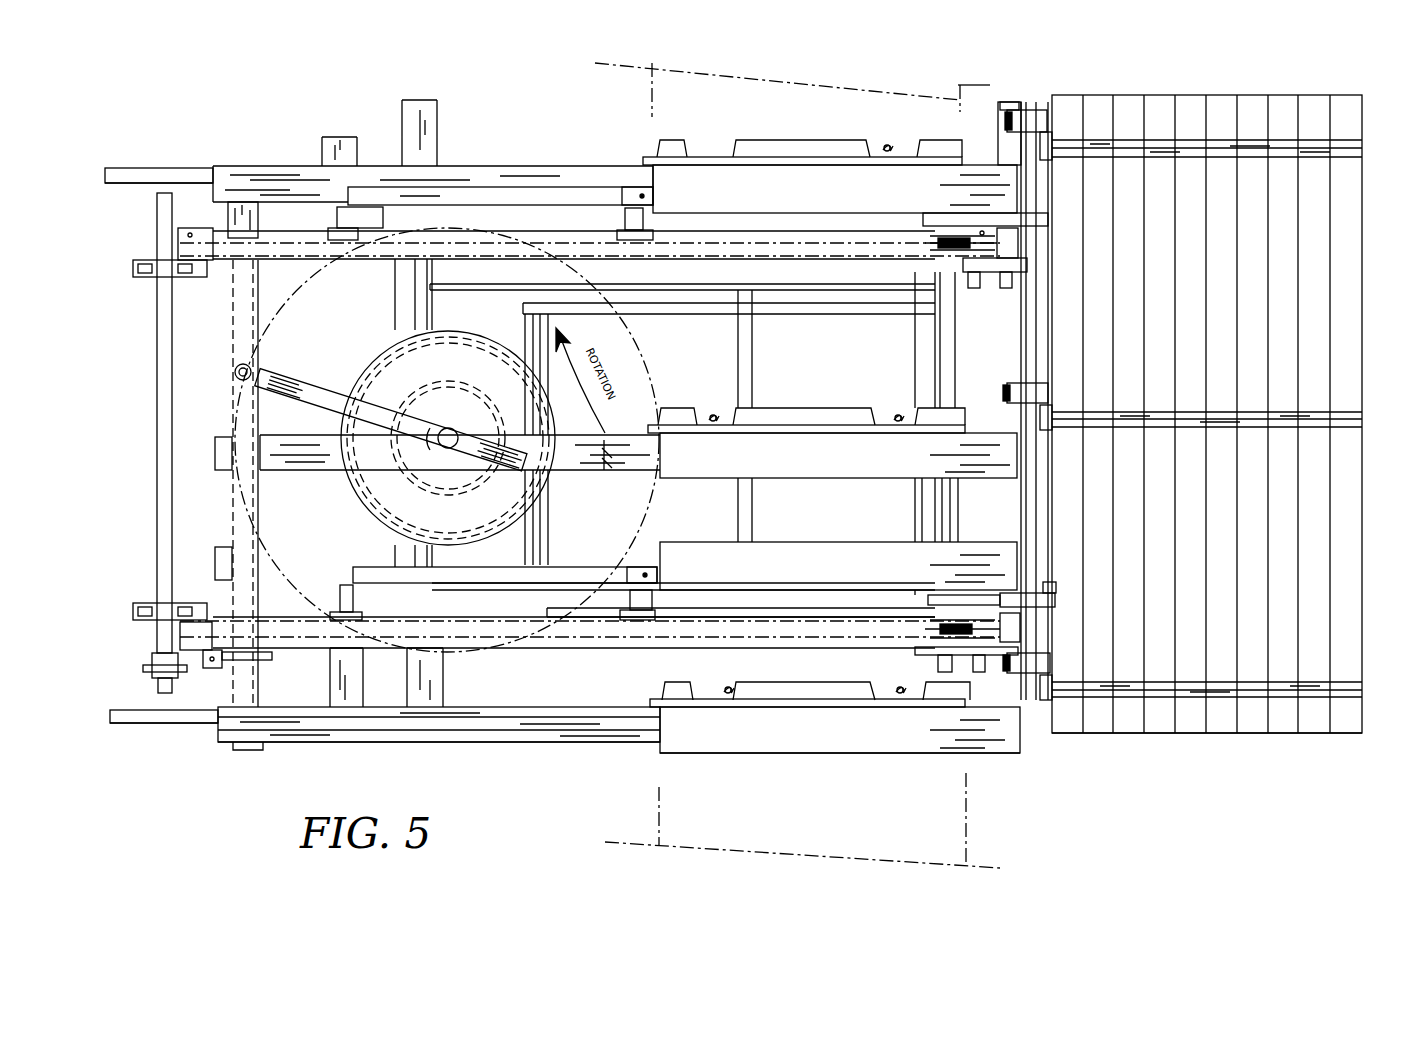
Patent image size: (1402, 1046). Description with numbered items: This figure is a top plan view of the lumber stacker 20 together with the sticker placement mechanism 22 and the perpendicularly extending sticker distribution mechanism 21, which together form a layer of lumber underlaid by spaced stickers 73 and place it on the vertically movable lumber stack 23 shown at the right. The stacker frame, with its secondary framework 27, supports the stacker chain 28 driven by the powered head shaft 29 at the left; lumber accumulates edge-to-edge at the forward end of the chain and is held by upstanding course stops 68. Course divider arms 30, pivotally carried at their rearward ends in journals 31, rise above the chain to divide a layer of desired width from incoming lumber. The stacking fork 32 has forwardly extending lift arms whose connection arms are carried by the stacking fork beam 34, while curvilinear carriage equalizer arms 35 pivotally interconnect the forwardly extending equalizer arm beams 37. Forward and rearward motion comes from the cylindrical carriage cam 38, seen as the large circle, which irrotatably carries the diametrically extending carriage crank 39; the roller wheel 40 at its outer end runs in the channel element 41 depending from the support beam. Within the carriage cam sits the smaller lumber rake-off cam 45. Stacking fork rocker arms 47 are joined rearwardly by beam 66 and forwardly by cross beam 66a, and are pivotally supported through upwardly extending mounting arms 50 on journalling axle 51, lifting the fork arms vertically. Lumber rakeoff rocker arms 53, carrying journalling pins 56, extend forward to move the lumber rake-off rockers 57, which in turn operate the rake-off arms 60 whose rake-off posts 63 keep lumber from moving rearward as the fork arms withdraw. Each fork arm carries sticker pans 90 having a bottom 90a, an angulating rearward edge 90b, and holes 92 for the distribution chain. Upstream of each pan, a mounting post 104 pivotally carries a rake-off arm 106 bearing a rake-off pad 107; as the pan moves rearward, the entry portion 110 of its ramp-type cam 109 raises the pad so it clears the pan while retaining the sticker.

The lumber stacker 20 is at (305, 742).
The sticker distribution mechanism 21 is at (724, 846).
The sticker placement mechanism 22 is at (891, 744).
The lumber stack 23 is at (1193, 736).
The secondary framework 27 is at (1005, 150).
The stacker chain 28 is at (185, 245).
The powered head shaft 29 is at (157, 505).
The course divider arms 30 is at (576, 185).
The journals 31 is at (337, 222).
The stacking fork 32 is at (303, 166).
The stacking fork beam 34 is at (240, 215).
The carriage equalizer arms 35 is at (125, 183).
The equalizer arm beams 37 is at (228, 168).
The carriage cam 38 is at (480, 345).
The carriage crank 39 is at (338, 380).
The roller wheel 40 is at (248, 383).
The channel element 41 is at (235, 318).
The lumber rake-off cam 45 is at (510, 412).
The stacking fork rocker arms 47 is at (468, 275).
The mounting arms 50 is at (560, 312).
The journalling axle 51 is at (610, 235).
The lumber rakeoff rocker arms 53 is at (825, 305).
The journalling pin 56 is at (750, 520).
The lumber rake-off rockers 57 is at (925, 425).
The rake-off arms 60 is at (855, 215).
The rake-off posts 63 is at (1035, 215).
The beam 66 is at (415, 318).
The cross beam 66a is at (943, 357).
The course stops 68 is at (968, 290).
The stickers 73 is at (1318, 140).
The sticker pans 90 is at (782, 162).
The bottom 90a is at (672, 140).
The rearward edge 90b is at (780, 140).
The holes 92 is at (887, 142).
The mounting post 104 is at (1010, 100).
The rake-off arm 106 is at (1027, 118).
The rake-off pad 107 is at (1055, 140).
The ramp-type cam 109 is at (755, 170).
The entry portion 110 is at (648, 157).